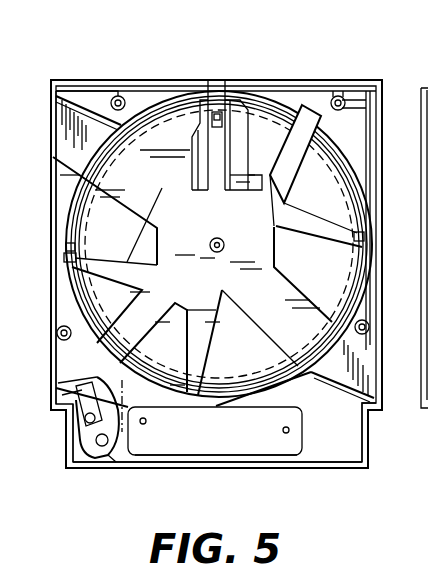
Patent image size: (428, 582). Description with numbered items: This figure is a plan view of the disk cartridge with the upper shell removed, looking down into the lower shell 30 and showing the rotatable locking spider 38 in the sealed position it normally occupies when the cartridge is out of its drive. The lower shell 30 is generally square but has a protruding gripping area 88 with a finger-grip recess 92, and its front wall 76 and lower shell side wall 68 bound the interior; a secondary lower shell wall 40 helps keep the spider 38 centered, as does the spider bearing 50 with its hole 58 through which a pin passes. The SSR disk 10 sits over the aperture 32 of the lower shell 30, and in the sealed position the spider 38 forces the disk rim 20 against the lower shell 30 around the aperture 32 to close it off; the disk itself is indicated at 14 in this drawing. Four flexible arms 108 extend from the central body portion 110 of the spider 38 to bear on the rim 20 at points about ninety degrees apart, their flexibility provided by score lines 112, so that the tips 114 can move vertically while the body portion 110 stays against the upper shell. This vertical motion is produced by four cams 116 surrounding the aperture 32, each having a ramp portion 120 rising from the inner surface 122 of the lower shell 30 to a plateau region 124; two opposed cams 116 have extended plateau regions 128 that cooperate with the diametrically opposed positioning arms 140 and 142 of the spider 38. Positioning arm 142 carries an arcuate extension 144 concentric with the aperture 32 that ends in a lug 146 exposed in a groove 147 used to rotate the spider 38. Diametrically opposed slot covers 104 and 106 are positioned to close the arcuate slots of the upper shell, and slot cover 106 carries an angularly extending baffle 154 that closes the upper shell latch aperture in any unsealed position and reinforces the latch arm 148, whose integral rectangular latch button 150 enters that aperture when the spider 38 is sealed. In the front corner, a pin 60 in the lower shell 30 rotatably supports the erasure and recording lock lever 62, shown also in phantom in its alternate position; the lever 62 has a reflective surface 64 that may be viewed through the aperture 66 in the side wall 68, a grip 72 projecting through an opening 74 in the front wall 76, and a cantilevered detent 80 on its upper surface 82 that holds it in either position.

The SSR disk 10 is at (261, 353).
The flexible disk 14 is at (285, 365).
The disk rim 20 is at (241, 388).
The lower shell 30 is at (374, 81).
The aperture 32 is at (352, 259).
The rotatable locking spider 38 is at (152, 150).
The secondary lower shell wall 40 is at (55, 300).
The spider bearing 50 is at (226, 246).
The hole 58 is at (222, 241).
The pin 60 is at (100, 446).
The erasure and recording lock lever 62 is at (215, 431).
The reflective surface 64 is at (56, 372).
The aperture 66 is at (57, 391).
The lower shell side wall 68 is at (55, 200).
The grip 72 is at (109, 462).
The opening 74 is at (86, 463).
The front wall 76 is at (313, 468).
The cantilevered detent 80 is at (90, 427).
The upper surface 82 is at (82, 417).
The protruding gripping area 88 is at (363, 466).
The finger-grip recess 92 is at (202, 456).
The slot cover 104 is at (345, 264).
The slot cover 106 is at (104, 193).
The flexible arms 108 is at (238, 142).
The central body portion 110 is at (164, 248).
The score lines 112 is at (256, 183).
The tips 114 is at (238, 102).
The cams 116 is at (78, 170).
The ramp portions 120 is at (163, 382).
The inner surface 122 is at (336, 445).
The plateau regions 124 is at (327, 143).
The extended plateau regions 128 is at (65, 273).
The positioning arm 140 is at (115, 330).
The positioning arm 142 is at (252, 190).
The arcuate extension 144 is at (312, 112).
The lug 146 is at (375, 198).
The groove 147 is at (382, 84).
The latch arm 148 is at (215, 108).
The latch button 150 is at (217, 85).
The baffle 154 is at (167, 122).